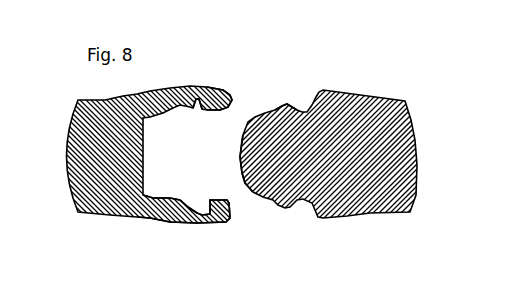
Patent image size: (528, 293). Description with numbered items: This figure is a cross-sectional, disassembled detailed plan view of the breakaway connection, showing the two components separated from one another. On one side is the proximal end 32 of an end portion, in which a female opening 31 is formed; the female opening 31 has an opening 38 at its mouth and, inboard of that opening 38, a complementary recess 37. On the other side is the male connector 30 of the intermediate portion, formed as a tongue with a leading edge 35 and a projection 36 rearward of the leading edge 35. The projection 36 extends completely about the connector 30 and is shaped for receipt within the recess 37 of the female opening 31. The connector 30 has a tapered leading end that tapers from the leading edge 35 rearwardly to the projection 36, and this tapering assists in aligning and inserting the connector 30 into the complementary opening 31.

The male connector 30 is at (315, 110).
The female opening 31 is at (165, 157).
The proximal end 32 is at (142, 218).
The leading edge 35 is at (242, 168).
The projection 36 is at (285, 103).
The recess 37 is at (197, 108).
The opening of the female opening 38 is at (232, 107).